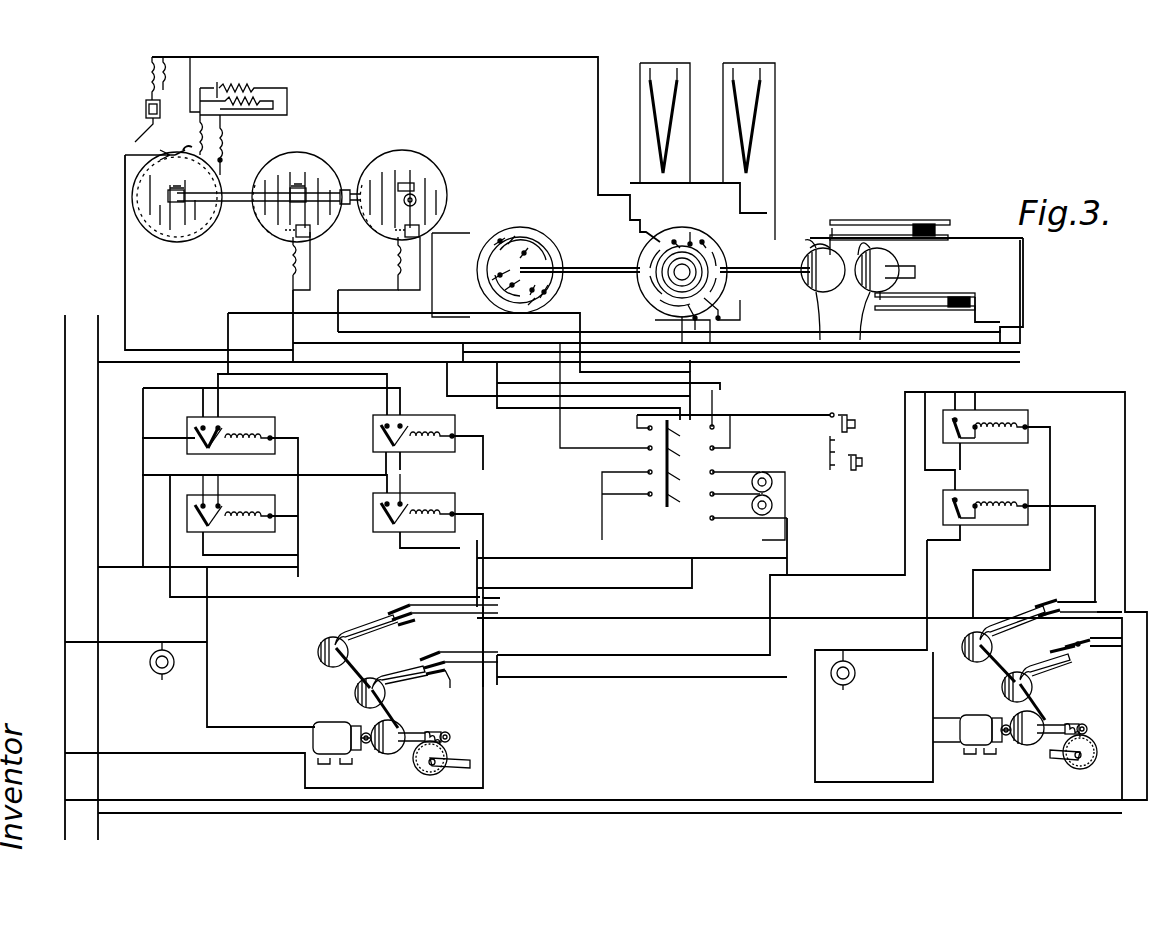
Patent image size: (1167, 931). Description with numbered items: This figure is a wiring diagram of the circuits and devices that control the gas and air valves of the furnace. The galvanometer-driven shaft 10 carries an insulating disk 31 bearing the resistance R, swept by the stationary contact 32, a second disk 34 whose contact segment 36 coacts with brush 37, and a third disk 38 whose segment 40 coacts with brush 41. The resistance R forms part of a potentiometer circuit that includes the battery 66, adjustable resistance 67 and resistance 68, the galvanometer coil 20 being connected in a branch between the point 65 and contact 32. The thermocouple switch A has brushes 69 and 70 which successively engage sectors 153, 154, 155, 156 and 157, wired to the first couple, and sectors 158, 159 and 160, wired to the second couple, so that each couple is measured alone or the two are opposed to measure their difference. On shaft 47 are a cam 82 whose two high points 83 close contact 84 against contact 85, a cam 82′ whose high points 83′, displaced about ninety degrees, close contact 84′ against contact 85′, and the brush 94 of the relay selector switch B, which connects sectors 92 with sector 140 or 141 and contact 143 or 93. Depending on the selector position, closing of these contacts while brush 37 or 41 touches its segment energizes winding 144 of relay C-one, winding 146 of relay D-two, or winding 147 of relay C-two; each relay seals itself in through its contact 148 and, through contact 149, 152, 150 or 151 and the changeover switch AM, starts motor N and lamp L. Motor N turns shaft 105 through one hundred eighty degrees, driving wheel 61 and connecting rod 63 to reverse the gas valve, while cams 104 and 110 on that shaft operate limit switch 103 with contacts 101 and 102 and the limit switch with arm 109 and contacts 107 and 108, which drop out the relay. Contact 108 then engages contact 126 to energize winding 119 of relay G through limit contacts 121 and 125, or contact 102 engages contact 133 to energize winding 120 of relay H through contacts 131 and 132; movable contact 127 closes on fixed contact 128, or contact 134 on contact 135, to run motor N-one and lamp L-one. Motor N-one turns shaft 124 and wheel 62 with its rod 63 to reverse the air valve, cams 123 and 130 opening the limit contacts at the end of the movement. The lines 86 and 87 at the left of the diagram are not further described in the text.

The shaft 10 is at (240, 193).
The galvanometer coil 20 is at (146, 104).
The disk 31 is at (198, 230).
The stationary brush or contact 32 is at (175, 153).
The second disk 34 is at (308, 168).
The contact segment 36 is at (290, 238).
The stationary brush or contact 37 is at (318, 258).
The third disk 38 is at (428, 166).
The contact segment 40 is at (400, 240).
The stationary brush or contact 41 is at (395, 255).
The shaft 47 is at (625, 266).
The wheel 61 is at (450, 735).
The wheel 62 is at (1085, 724).
The connecting rod 63 is at (445, 766).
The point of potentiometer circuit 65 is at (272, 103).
The source of current or battery 66 is at (220, 80).
The adjustable resistance 67 is at (248, 86).
The resistance 68 is at (255, 118).
The switch contact 69 is at (692, 230).
The switch contact 70 is at (676, 240).
The cam 82 is at (822, 292).
The cam 82′ is at (896, 282).
The high points 83 is at (810, 250).
The high points 83′ is at (895, 252).
The contact 84 is at (900, 234).
The contact 84′ is at (945, 293).
The contact 85 is at (850, 220).
The contact 85′ is at (912, 310).
The conductor 86 is at (98, 396).
The conductor 87 is at (65, 398).
The contact sectors 92 is at (500, 238).
The contact sector 93 is at (540, 265).
The brush 94 is at (530, 250).
The limit switch contact 101 is at (400, 607).
The limit switch contact 102 is at (366, 634).
The limit switch 103 is at (358, 630).
The cam 104 is at (318, 658).
The shaft 105 is at (400, 722).
The limit switch contact 107 is at (420, 660).
The limit switch contact 108 is at (426, 675).
The arm 109 is at (393, 671).
The cam 110 is at (385, 697).
The winding of relay G 119 is at (1015, 420).
The winding of relay H 120 is at (1030, 525).
The limit switch contact 121 is at (1072, 664).
The cam 123 is at (1032, 683).
The shaft 124 is at (1045, 690).
The limit switch contact 125 is at (1081, 633).
The contact 126 is at (458, 682).
The movable contact 127 is at (945, 436).
The fixed contact 128 is at (952, 418).
The cam 130 is at (991, 656).
The limit switch contact 131 is at (1038, 626).
The limit switch contact 132 is at (1050, 602).
The contact 133 is at (407, 625).
The movable contact 134 is at (945, 512).
The fixed contact 135 is at (960, 498).
The sector 140 is at (520, 228).
The contact sector 141 is at (495, 276).
The contact 143 is at (545, 282).
The winding of relay C1 144 is at (250, 428).
The winding of relay D2 146 is at (446, 430).
The winding of relay C2 147 is at (258, 530).
The seal-in contact 148 is at (222, 428).
The relay contact 149 is at (195, 438).
The relay contact 150 is at (200, 532).
The relay contact 151 is at (382, 514).
The relay contact 152 is at (380, 446).
The switch sector 153 is at (705, 240).
The switch sector 154 is at (662, 304).
The switch sector 155 is at (716, 258).
The switch sector 156 is at (716, 280).
The sector 157 is at (668, 268).
The sector 158 is at (720, 300).
The sector 159 is at (700, 322).
The sector 160 is at (655, 286).